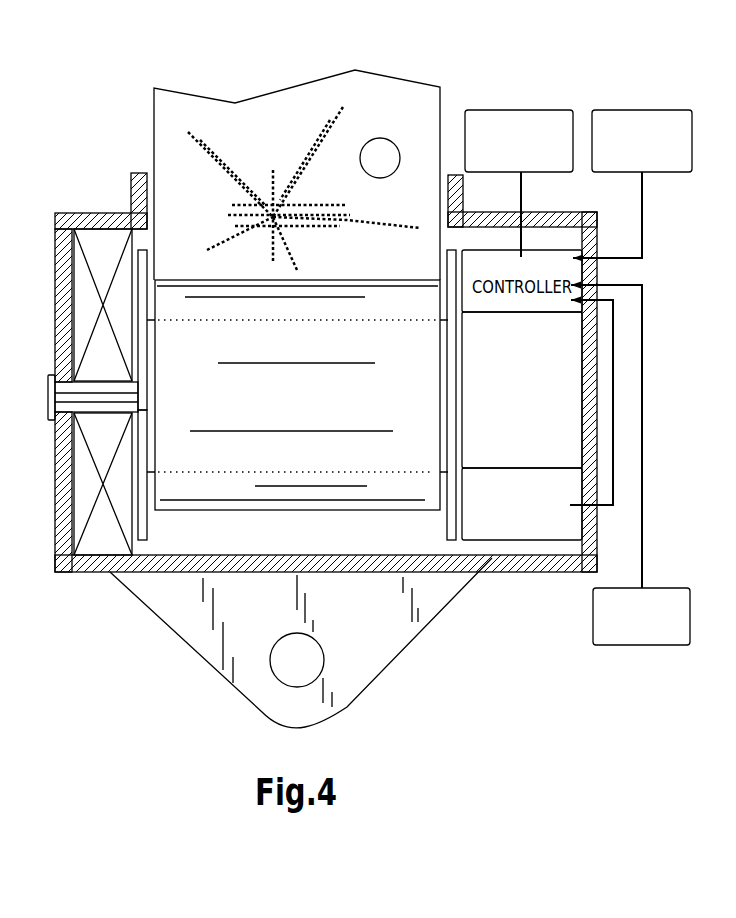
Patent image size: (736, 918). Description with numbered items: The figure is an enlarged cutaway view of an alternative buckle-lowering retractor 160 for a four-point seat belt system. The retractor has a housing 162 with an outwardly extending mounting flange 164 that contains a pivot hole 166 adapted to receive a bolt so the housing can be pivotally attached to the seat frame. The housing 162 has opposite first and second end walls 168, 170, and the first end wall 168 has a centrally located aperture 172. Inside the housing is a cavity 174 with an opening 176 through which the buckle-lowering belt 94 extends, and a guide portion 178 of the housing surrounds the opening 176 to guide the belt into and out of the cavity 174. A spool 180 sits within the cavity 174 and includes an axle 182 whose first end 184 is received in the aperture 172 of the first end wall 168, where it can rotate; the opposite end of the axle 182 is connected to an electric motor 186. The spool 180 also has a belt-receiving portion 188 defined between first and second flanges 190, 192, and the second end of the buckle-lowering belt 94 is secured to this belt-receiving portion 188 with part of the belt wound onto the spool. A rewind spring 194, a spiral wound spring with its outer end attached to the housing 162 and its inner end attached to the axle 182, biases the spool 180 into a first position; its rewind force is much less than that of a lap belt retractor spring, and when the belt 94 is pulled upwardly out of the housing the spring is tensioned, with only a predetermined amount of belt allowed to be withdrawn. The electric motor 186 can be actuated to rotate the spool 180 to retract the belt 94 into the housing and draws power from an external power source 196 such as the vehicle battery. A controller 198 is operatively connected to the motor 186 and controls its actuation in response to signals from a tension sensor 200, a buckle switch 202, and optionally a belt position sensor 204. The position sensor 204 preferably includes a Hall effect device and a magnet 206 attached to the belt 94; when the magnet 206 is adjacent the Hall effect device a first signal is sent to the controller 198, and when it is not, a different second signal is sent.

The buckle-lowering belt 94 is at (303, 108).
The buckle-lowering retractor 160 is at (113, 589).
The housing 162 is at (548, 574).
The mounting flange 164 is at (240, 628).
The pivot hole 166 is at (312, 672).
The first end wall 168 is at (55, 228).
The second end wall 170 is at (597, 425).
The aperture 172 is at (65, 383).
The cavity 174 is at (306, 545).
The opening 176 is at (146, 168).
The guide portion 178 is at (130, 172).
The spool 180 is at (148, 528).
The axle 182 is at (113, 405).
The first end 184 is at (50, 397).
The electric motor 186 is at (562, 407).
The belt-receiving portion 188 is at (386, 471).
The first flange 190 is at (147, 252).
The second flange 192 is at (447, 541).
The rewind spring 194 is at (102, 529).
The power source 196 is at (638, 112).
The controller 198 is at (574, 267).
The tension sensor 200 is at (570, 525).
The buckle switch 202 is at (638, 646).
The belt position sensor 204 is at (530, 112).
The magnet 206 is at (386, 152).